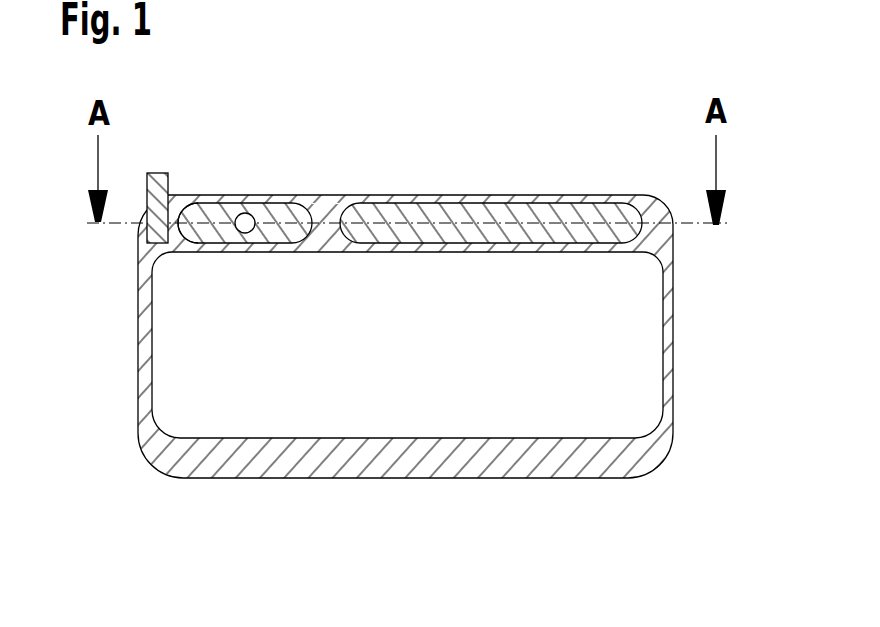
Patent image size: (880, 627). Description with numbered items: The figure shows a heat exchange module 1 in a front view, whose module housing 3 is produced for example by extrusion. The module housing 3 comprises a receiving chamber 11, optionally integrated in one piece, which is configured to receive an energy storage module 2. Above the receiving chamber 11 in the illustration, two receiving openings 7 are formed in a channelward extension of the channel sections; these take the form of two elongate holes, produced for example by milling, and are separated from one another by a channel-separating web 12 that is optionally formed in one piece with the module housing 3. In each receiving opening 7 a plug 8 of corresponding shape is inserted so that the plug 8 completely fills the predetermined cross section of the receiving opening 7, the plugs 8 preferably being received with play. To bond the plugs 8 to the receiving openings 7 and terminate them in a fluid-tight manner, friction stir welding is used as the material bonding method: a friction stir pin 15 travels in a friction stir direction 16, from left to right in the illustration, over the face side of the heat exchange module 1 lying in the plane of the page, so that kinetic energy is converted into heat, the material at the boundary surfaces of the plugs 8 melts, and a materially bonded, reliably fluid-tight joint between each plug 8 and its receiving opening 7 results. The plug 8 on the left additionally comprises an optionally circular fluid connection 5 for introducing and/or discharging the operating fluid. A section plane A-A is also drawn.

The heat exchange module 1 is at (439, 283).
The energy storage module 2 is at (405, 376).
The module housing 3 is at (492, 463).
The fluid connection 5 is at (247, 213).
The receiving openings 7 is at (215, 226).
The plug 8 is at (284, 212).
The receiving chamber 11 is at (423, 368).
The channel-separating web 12 is at (322, 206).
The friction stir pin 15 is at (158, 172).
The friction stir direction 16 is at (189, 222).